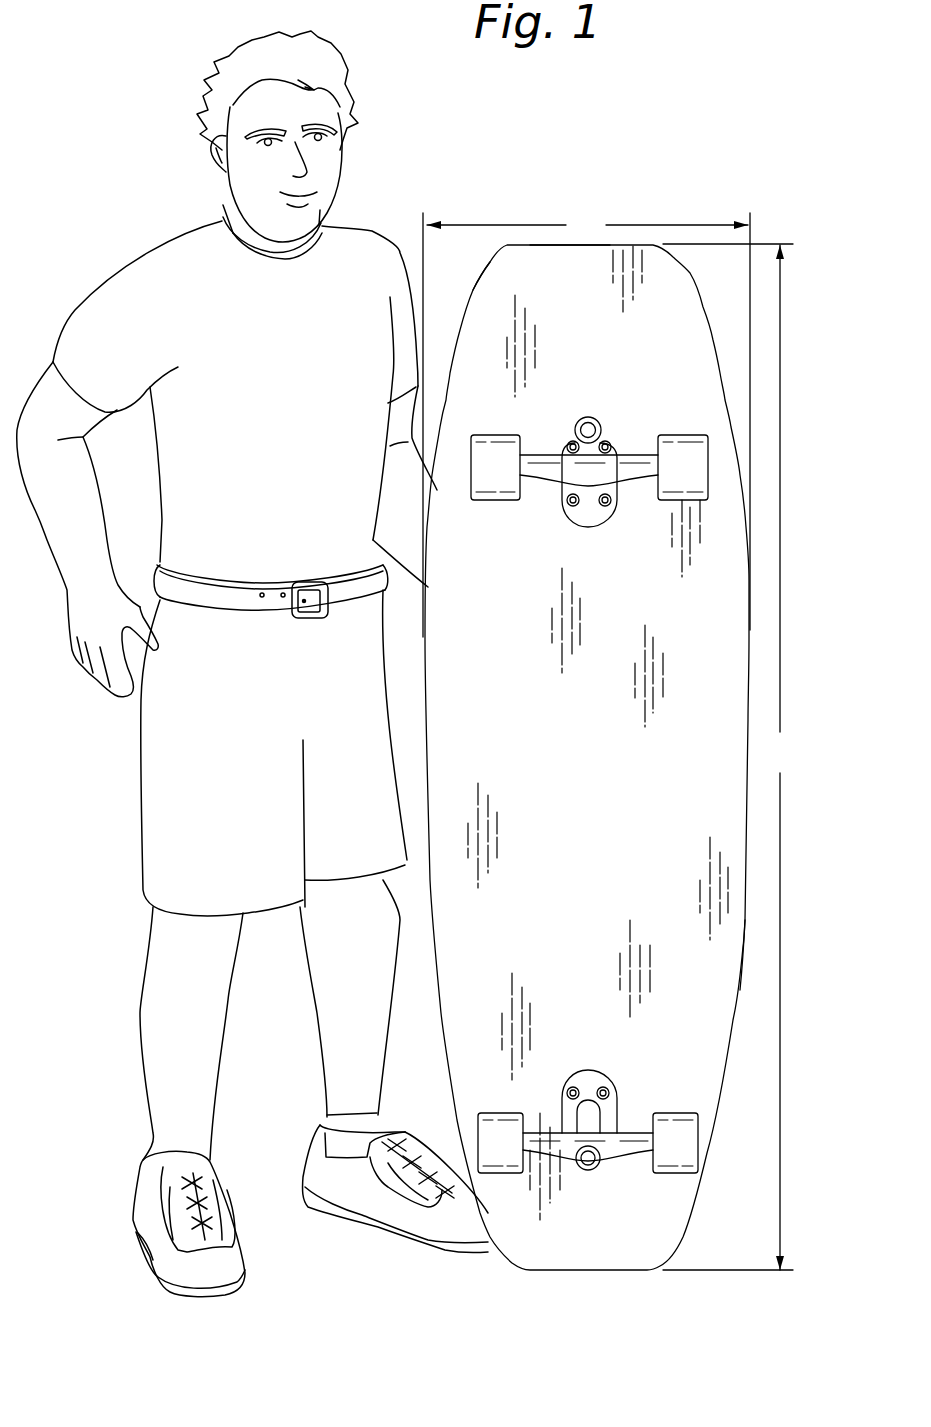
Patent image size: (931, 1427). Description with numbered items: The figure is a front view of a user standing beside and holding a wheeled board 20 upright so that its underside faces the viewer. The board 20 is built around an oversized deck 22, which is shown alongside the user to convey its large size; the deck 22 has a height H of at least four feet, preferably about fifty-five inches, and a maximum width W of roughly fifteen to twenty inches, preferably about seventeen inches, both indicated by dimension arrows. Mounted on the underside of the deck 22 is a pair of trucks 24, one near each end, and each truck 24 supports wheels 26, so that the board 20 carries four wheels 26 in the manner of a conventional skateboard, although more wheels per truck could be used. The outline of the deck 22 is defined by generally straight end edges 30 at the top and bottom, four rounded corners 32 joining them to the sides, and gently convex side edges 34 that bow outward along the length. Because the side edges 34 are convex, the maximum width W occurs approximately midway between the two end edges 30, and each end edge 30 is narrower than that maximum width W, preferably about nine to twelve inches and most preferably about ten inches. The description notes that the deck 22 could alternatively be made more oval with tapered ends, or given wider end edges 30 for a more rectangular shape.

The wheeled board 20 is at (733, 128).
The deck 22 is at (602, 831).
The trucks 24 is at (548, 478).
The wheels 26 is at (510, 437).
The end edges 30 is at (557, 245).
The rounded corners 32 is at (492, 265).
The side edges 34 is at (742, 948).
The maximum width W is at (586, 423).
The height H is at (728, 757).